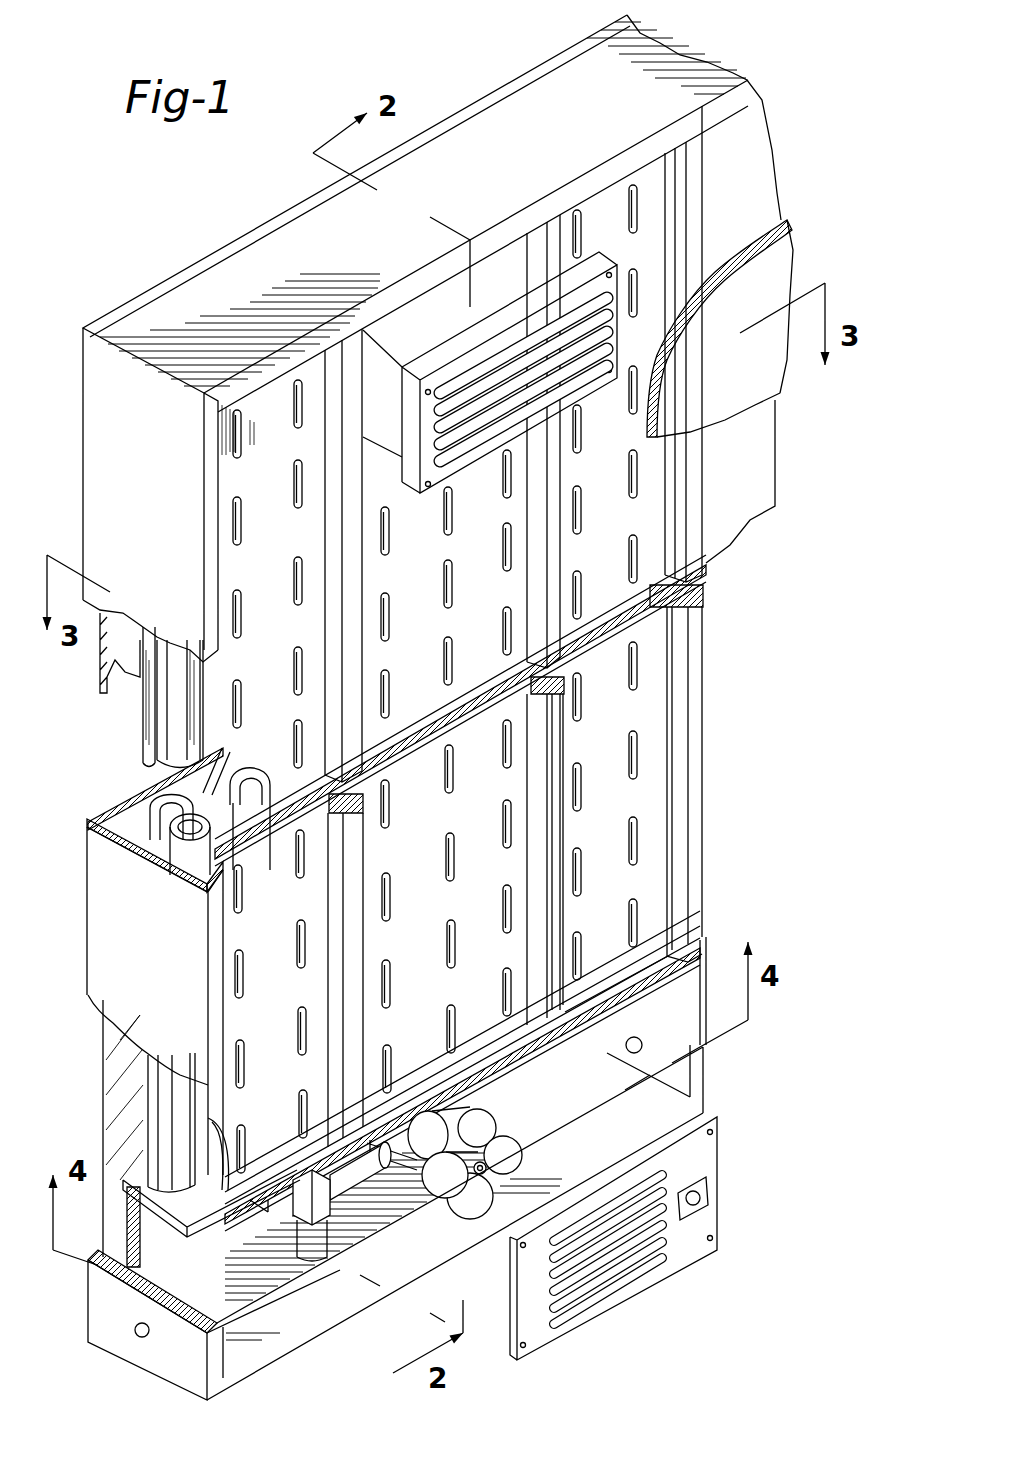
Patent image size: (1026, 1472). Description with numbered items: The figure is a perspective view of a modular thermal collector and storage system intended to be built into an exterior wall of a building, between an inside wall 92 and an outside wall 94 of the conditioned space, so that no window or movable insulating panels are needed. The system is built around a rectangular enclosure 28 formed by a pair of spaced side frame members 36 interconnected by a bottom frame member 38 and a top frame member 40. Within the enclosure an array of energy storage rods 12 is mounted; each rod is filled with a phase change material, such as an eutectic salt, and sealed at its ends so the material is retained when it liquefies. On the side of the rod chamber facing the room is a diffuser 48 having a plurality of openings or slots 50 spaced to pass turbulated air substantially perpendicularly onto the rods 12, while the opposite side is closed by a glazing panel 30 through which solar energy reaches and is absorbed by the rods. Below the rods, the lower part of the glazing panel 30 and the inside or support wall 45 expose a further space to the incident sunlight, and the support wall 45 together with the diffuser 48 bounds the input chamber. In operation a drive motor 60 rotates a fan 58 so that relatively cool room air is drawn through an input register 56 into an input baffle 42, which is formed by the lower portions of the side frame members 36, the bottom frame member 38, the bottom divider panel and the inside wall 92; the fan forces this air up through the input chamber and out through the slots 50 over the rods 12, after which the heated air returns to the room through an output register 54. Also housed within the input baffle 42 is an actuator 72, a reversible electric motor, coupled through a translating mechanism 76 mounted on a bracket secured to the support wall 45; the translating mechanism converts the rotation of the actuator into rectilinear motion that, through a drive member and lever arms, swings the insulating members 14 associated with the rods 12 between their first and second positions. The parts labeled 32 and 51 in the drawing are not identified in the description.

The energy storage rods 12 is at (197, 878).
The insulating members 14 is at (157, 862).
The enclosure 28 is at (108, 303).
The glazing panel 30 is at (103, 1080).
The side wall 32 is at (83, 405).
The side frame members 36 is at (700, 690).
The bottom frame member 38 is at (308, 1360).
The top frame member 40 is at (182, 288).
The input baffle 42 is at (352, 1293).
The inside or support wall 45 is at (282, 1295).
The diffuser 48 is at (497, 808).
The openings or slots 50 is at (300, 592).
The side panel 51 is at (560, 739).
The output register 54 is at (492, 333).
The input register 56 is at (640, 1288).
The fan 58 is at (514, 1148).
The drive motor 60 is at (452, 1105).
The actuator 72 is at (328, 1237).
The translating mechanism 76 is at (360, 1203).
The inside wall 92 is at (778, 258).
The outside wall 94 is at (638, 35).